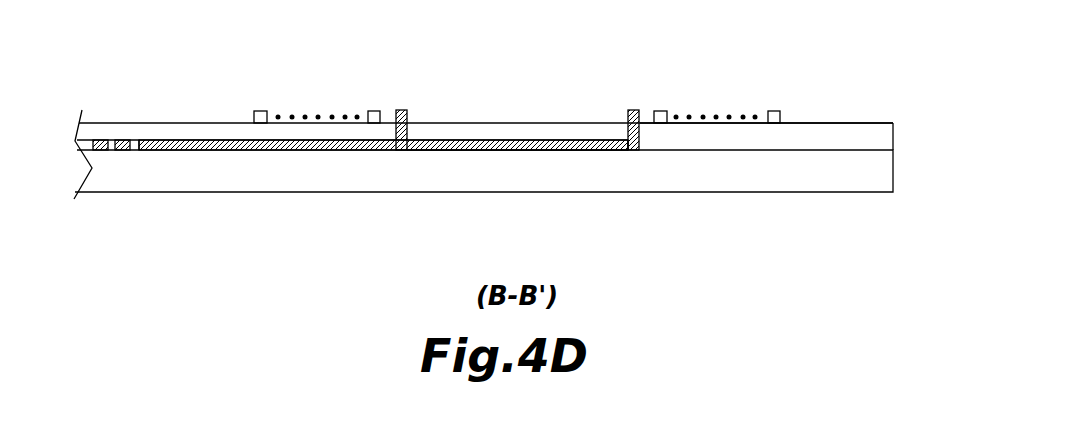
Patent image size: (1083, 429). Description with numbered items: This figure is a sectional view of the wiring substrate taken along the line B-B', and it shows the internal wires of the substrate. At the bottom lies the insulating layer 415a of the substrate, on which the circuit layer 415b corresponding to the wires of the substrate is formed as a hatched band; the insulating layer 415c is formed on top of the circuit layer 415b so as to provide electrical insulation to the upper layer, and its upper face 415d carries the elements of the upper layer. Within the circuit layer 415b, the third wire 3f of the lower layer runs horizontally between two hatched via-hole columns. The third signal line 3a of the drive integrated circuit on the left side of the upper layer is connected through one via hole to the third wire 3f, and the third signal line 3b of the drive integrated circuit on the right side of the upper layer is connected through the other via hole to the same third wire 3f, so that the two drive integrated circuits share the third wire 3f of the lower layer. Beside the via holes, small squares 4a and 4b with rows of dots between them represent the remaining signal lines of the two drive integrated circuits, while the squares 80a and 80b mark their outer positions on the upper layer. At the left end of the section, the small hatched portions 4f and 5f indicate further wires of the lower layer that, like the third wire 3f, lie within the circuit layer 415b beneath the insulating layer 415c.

The third signal line 3a is at (402, 110).
The third signal line 3b is at (633, 110).
The third wire 3f is at (413, 150).
The electrode pad 4a is at (372, 111).
The electrode pad 4b is at (660, 111).
The electrode 4f is at (130, 140).
The contact 5f is at (100, 141).
The terminal 80a is at (260, 111).
The terminal 80b is at (775, 111).
The insulating layer 415a is at (893, 173).
The circuit layer 415b is at (202, 140).
The insulating layer 415c is at (893, 138).
The surface of insulating layer 415d is at (781, 117).